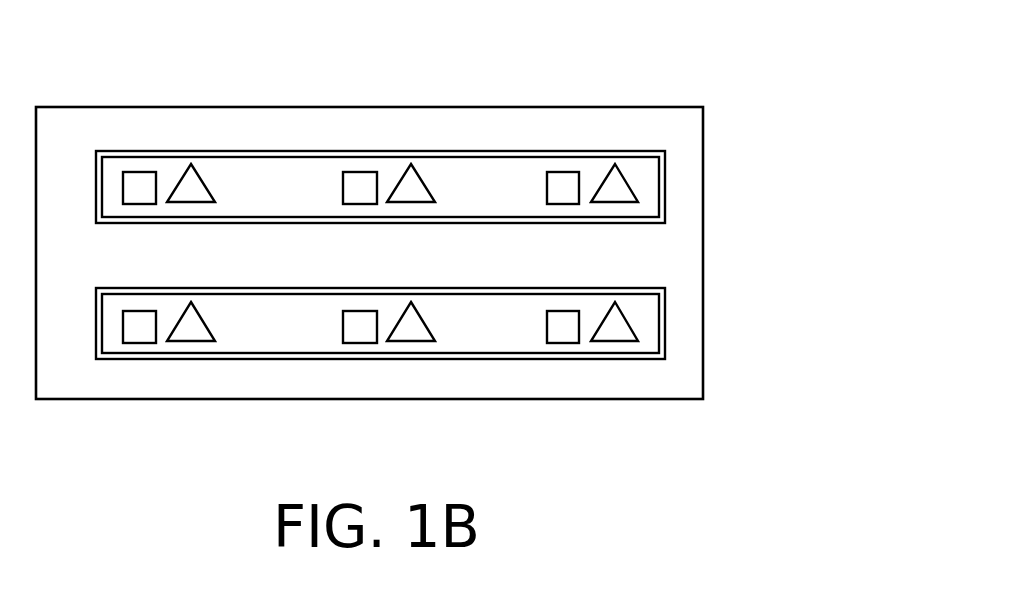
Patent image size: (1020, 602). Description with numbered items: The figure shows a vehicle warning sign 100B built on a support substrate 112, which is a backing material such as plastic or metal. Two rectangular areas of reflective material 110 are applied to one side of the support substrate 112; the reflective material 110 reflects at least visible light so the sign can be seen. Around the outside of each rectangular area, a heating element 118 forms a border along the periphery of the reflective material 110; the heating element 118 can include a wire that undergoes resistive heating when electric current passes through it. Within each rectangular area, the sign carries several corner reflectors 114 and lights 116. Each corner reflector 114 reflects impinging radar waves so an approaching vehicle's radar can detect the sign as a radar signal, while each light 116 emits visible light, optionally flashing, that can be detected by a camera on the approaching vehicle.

The vehicle warning sign 100B is at (676, 42).
The support substrate 112 is at (573, 140).
The reflective material 110 is at (248, 183).
The heating element 118 is at (472, 150).
The corner reflector 114 is at (203, 320).
The light 116 is at (547, 328).